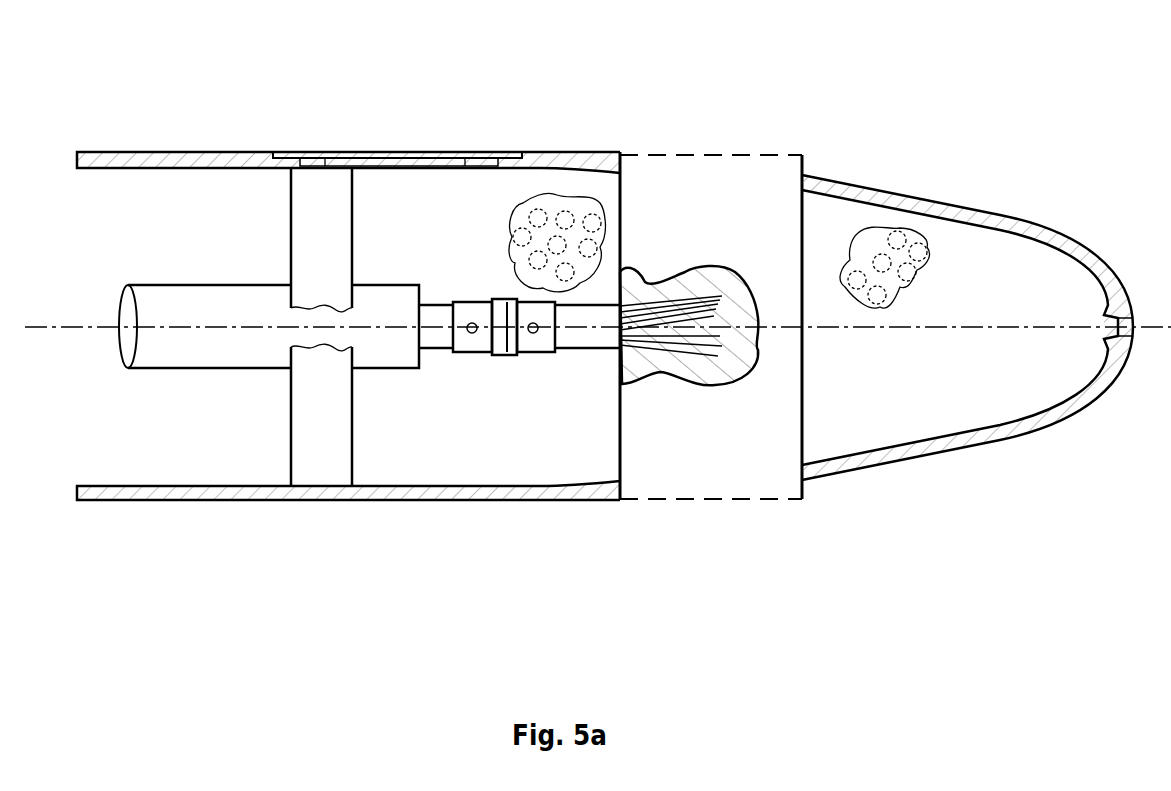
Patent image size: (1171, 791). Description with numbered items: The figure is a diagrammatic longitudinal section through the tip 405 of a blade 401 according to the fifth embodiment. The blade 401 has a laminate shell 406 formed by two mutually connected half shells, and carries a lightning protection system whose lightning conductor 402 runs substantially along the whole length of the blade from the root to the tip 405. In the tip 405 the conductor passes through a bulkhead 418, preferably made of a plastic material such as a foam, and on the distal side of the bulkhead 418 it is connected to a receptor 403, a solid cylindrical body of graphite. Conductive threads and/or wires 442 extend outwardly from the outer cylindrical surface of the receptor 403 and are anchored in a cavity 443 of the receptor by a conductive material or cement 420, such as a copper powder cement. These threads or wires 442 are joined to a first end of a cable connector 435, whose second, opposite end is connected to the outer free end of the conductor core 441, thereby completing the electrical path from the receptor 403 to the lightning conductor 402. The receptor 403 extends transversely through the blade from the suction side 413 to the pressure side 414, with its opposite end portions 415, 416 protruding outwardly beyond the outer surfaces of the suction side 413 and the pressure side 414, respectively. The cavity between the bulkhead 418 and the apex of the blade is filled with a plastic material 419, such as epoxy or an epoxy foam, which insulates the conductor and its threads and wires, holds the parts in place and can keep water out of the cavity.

The blade 401 is at (474, 148).
The lightning conductor 402 is at (157, 300).
The receptor 403 is at (795, 155).
The tip 405 is at (824, 172).
The laminate shell 406 is at (170, 160).
The suction side 413 is at (257, 158).
The pressure side 414 is at (443, 505).
The end portion 415 is at (710, 154).
The end portion 416 is at (718, 501).
The bulkhead 418 is at (318, 468).
The plastic material 419 is at (553, 203).
The conductive material or cement 420 is at (677, 362).
The cable connector 435 is at (510, 303).
The conductor core 441 is at (433, 317).
The conductive threads and/or wires 442 is at (687, 270).
The cavity 443 is at (645, 372).